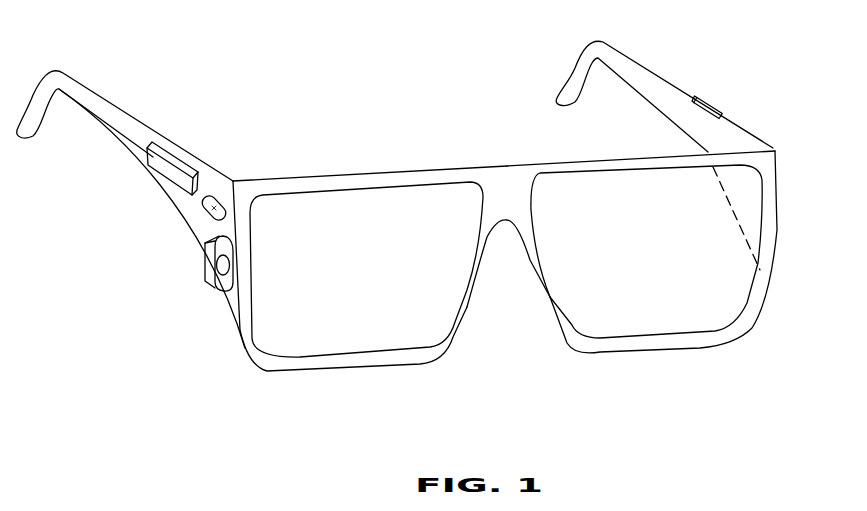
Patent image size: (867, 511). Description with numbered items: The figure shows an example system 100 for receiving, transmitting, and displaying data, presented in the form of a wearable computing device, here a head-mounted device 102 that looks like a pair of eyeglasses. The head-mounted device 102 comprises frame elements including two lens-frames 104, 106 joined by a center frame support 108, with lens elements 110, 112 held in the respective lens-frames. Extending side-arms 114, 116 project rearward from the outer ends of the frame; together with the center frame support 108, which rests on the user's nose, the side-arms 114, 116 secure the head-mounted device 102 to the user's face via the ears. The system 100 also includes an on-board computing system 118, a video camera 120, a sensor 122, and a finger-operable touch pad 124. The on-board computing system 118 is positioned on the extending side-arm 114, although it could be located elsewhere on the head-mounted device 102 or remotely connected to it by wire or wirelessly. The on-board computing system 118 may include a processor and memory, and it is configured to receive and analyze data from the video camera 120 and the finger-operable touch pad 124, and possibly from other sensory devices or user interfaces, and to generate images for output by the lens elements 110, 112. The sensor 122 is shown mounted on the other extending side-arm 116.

The system 100 is at (777, 320).
The head-mounted device 102 is at (348, 84).
The lens-frame 104 is at (335, 180).
The lens-frame 106 is at (590, 163).
The center frame support 108 is at (507, 188).
The lens element 110 is at (308, 335).
The lens element 112 is at (663, 318).
The extending side-arm 114 is at (168, 147).
The extending side-arm 116 is at (668, 82).
The on-board computing system 118 is at (165, 165).
The video camera 120 is at (205, 255).
The sensor 122 is at (713, 110).
The finger-operable touch pad 124 is at (207, 208).